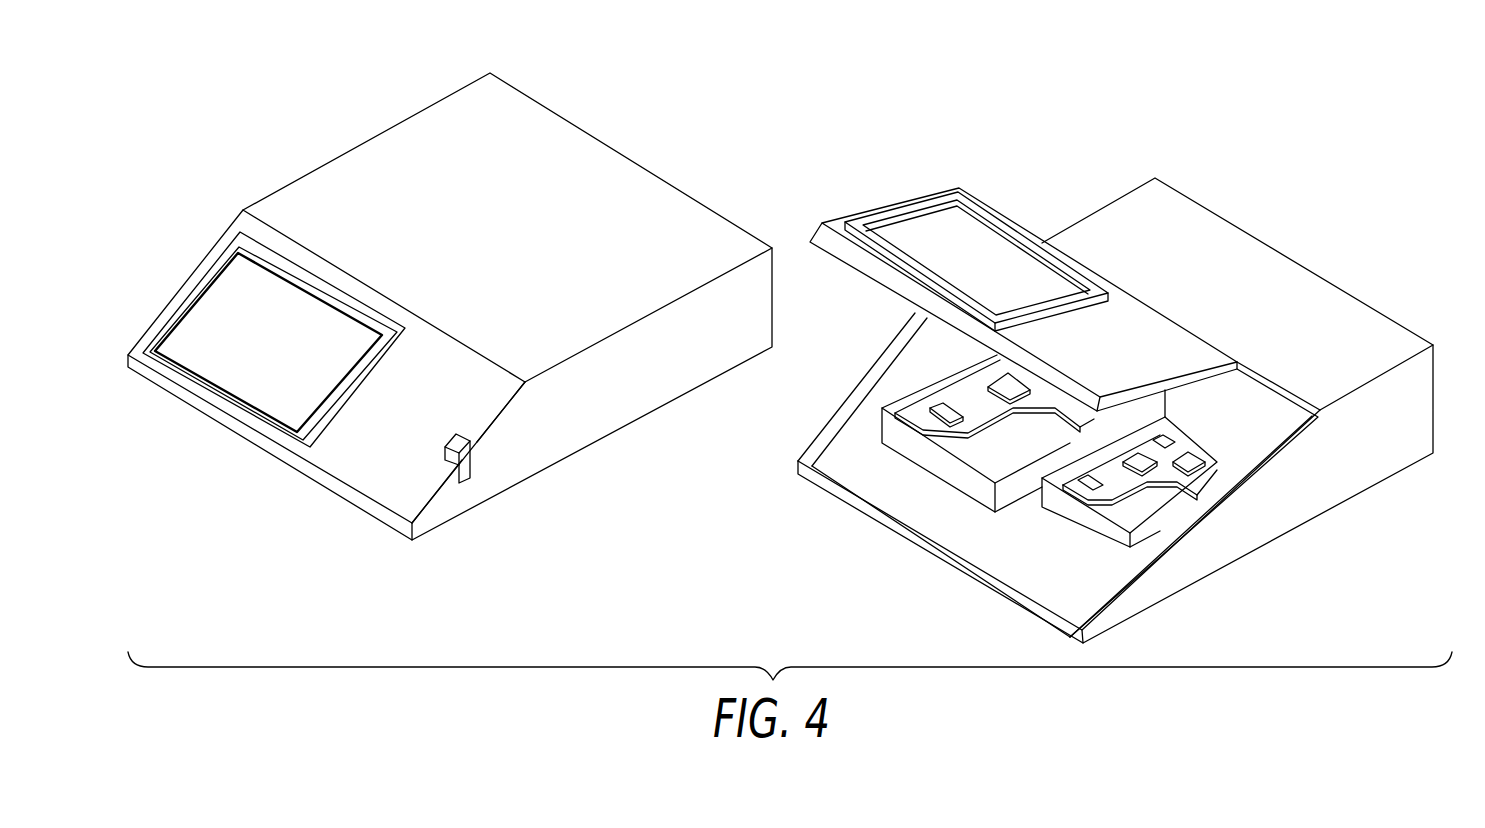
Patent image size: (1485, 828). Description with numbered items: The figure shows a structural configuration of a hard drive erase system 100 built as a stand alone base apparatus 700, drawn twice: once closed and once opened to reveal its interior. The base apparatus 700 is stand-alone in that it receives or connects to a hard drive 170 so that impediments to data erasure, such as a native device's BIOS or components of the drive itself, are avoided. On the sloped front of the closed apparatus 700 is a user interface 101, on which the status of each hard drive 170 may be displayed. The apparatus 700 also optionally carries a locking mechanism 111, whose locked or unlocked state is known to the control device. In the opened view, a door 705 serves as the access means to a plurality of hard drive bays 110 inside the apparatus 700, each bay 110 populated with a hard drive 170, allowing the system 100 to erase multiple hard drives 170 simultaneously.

The hard drive erase system 100 is at (790, 361).
The stand alone base apparatus 700 is at (542, 105).
The user interface 101 is at (240, 347).
The locking mechanism 111 is at (468, 452).
The door 705 is at (830, 222).
The hard drive bay 110 is at (824, 501).
The hard drive 170 is at (975, 487).